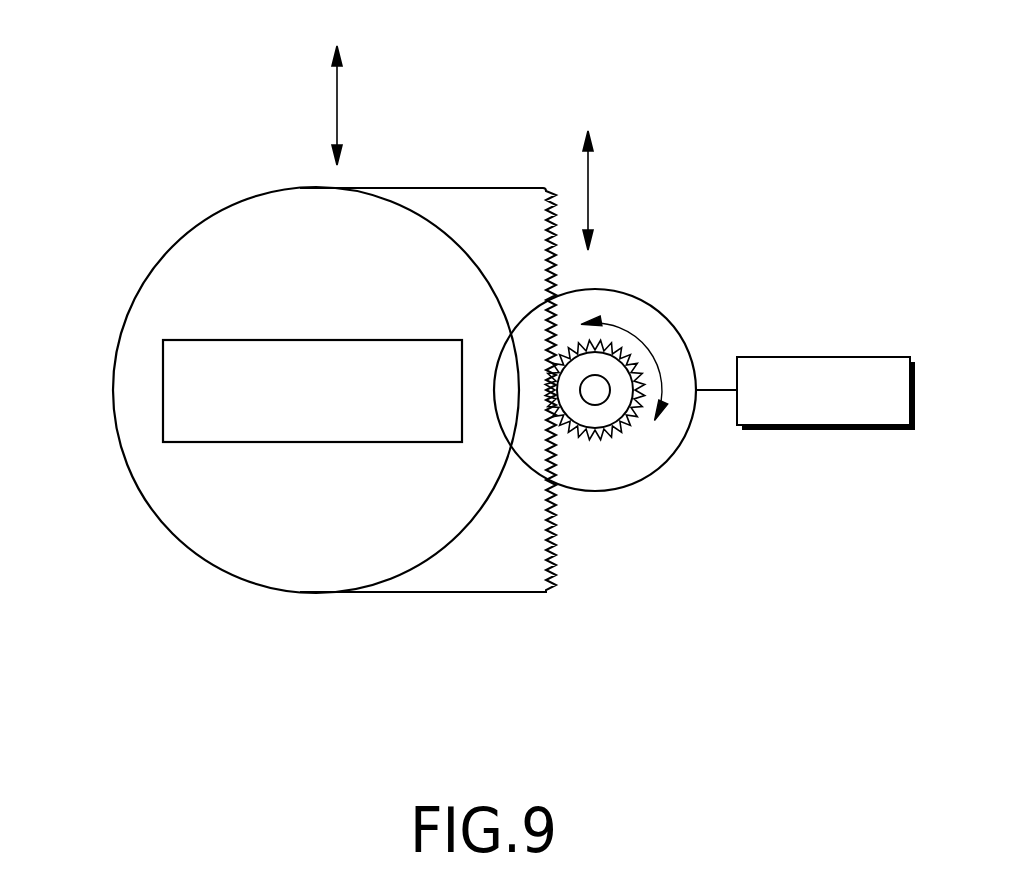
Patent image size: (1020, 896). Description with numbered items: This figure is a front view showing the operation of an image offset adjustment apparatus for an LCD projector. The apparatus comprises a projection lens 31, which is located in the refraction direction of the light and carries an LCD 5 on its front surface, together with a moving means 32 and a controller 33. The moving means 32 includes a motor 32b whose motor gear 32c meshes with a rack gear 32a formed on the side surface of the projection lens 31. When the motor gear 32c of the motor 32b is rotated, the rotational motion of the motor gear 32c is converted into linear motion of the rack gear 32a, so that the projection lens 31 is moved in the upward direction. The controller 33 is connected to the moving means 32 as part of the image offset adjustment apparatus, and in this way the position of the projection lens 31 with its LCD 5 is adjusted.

The LCD 5 is at (182, 392).
The projection lens 31 is at (165, 293).
The moving means 32 is at (571, 386).
The rack gear 32a is at (555, 268).
The motor 32b is at (685, 346).
The motor gear 32c is at (608, 348).
The controller 33 is at (822, 356).